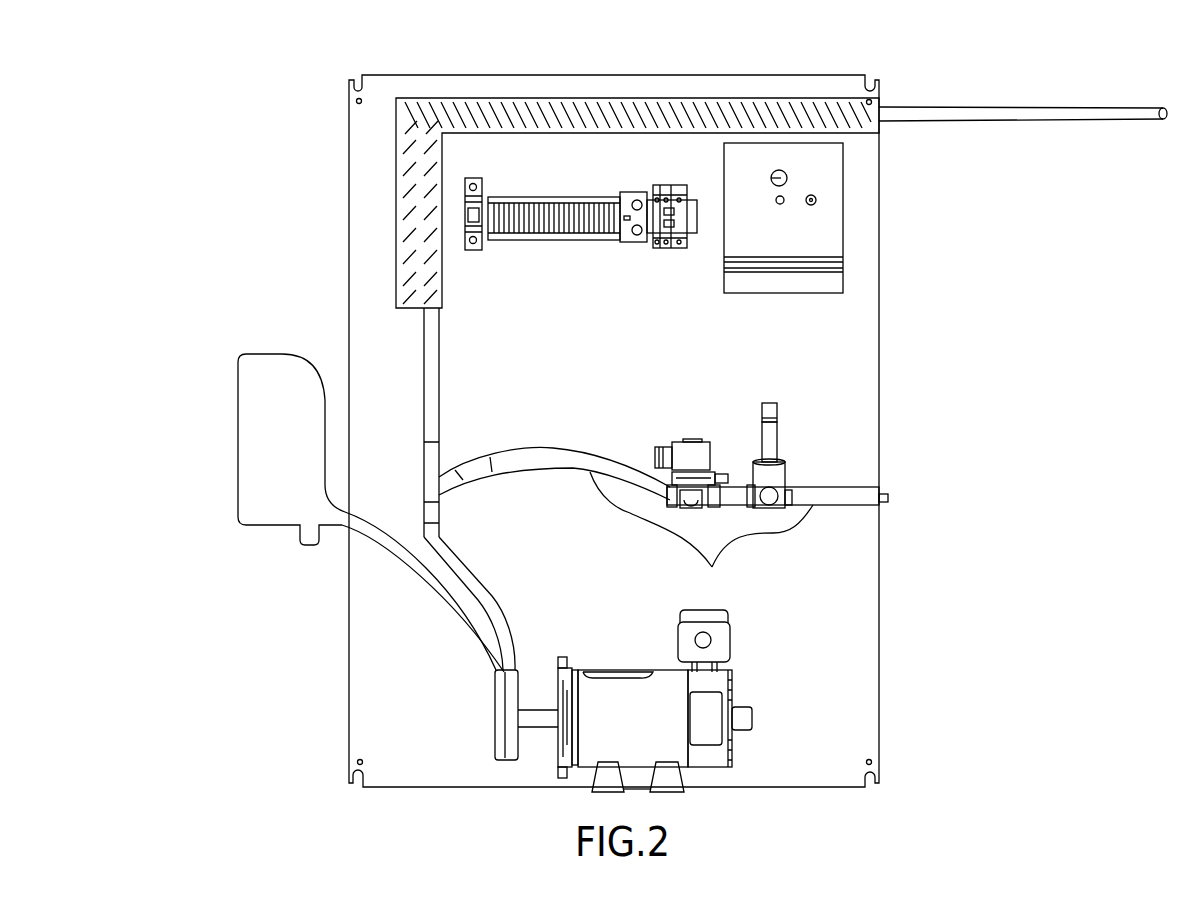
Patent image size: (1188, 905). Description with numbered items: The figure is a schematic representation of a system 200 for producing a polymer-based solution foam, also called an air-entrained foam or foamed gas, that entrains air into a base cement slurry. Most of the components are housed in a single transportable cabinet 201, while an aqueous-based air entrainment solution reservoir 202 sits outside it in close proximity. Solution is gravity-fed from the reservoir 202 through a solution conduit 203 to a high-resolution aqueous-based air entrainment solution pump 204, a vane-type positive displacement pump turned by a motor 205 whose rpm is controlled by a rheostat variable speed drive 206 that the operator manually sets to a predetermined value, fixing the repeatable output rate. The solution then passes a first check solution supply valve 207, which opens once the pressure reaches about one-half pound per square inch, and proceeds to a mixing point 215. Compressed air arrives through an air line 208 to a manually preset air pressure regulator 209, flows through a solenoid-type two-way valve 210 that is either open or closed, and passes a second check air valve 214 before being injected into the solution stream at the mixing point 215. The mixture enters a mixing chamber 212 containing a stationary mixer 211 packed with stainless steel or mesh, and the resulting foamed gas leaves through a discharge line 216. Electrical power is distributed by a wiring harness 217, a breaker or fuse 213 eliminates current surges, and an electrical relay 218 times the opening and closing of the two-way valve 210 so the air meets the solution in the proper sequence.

The system 200 is at (322, 106).
The cabinet 201 is at (350, 755).
The aqueous-based air entrainment solution reservoir 202 is at (222, 452).
The solution conduit 203 is at (487, 607).
The aqueous-based air entrainment solution pump 204 is at (495, 690).
The motor 205 is at (728, 620).
The variable speed drive 206 is at (843, 218).
The first check solution supply valve 207 is at (440, 515).
The air line 208 is at (701, 533).
The air pressure regulator 209 is at (778, 440).
The two-way valve 210 is at (680, 440).
The stationary mixer 211 is at (533, 117).
The mixing chamber 212 is at (477, 98).
The breaker or fuse 213 is at (472, 250).
The second check air valve 214 is at (479, 455).
The mixing point 215 is at (434, 480).
The discharge line 216 is at (1082, 121).
The wiring harness 217 is at (570, 240).
The electrical relay 218 is at (645, 247).